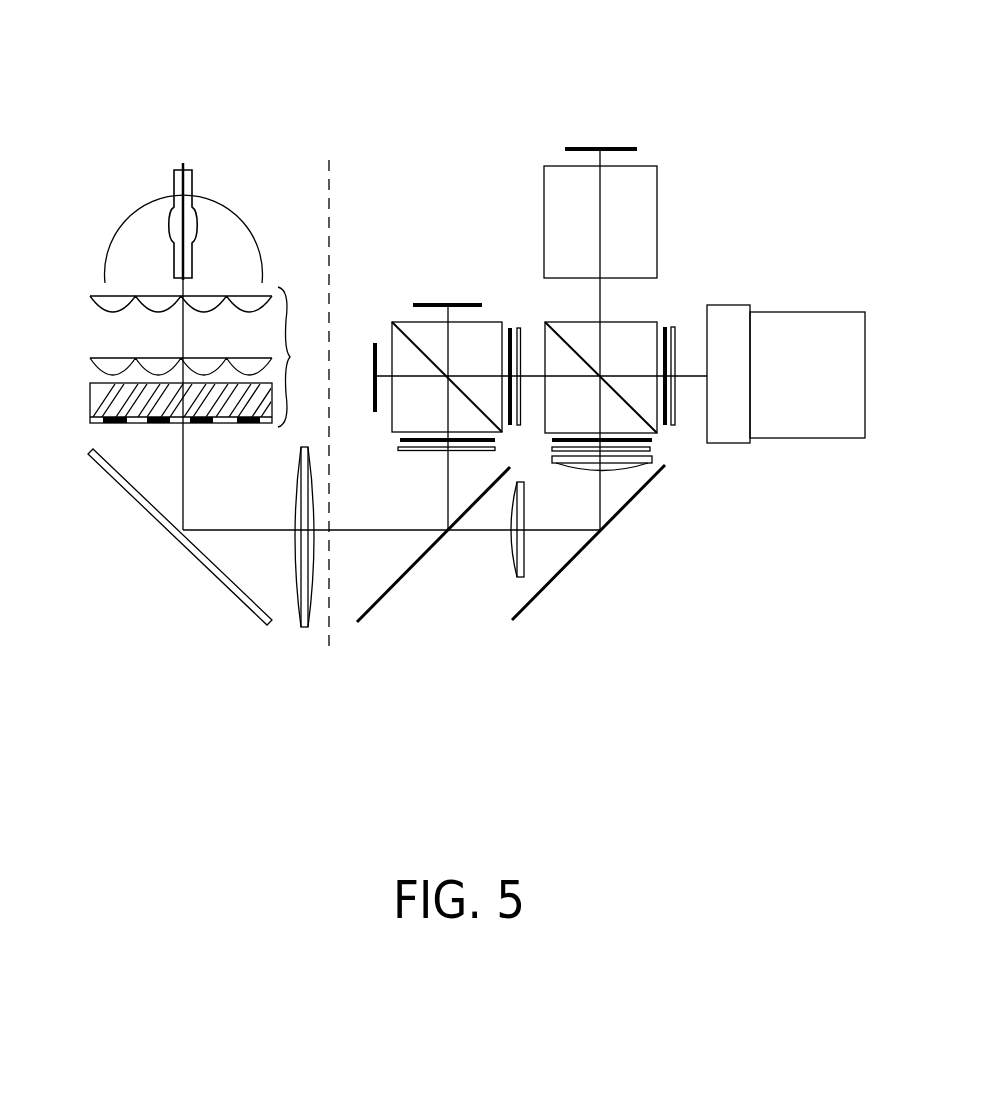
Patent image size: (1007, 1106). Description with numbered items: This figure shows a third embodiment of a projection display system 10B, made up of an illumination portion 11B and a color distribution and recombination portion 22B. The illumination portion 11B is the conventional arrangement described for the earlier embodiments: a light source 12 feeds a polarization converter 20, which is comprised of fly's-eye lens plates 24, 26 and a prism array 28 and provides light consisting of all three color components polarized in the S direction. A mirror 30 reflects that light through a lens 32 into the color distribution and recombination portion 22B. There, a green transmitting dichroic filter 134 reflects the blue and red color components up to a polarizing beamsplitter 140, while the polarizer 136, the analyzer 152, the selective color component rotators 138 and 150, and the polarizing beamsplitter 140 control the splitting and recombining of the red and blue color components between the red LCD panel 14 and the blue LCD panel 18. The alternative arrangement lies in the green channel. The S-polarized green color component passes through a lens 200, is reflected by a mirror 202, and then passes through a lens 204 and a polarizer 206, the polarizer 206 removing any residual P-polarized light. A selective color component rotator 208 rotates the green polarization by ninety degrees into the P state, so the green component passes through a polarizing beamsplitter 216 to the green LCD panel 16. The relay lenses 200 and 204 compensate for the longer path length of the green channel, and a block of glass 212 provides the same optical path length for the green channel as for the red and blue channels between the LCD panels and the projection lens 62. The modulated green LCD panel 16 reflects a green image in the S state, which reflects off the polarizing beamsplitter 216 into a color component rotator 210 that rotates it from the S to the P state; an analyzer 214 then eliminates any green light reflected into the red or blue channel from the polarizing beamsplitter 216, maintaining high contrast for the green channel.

The projection display system 10B is at (279, 68).
The illumination portion 11B is at (93, 540).
The light source 12 is at (155, 212).
The fly's-eye lens plate 24 is at (90, 297).
The fly's-eye lens plate 26 is at (92, 362).
The prism array 28 is at (92, 405).
The polarization converter 20 is at (292, 355).
The mirror 30 is at (200, 570).
The lens 32 is at (305, 628).
The red LCD panel 14 is at (340, 377).
The blue LCD panel 18 is at (448, 278).
The green LCD panel 16 is at (601, 122).
The polarizing beamsplitter 140 is at (392, 322).
The selective color component rotator 150 is at (510, 327).
The analyzer 152 is at (518, 327).
The selective color component rotator 138 is at (400, 440).
The polarizer 136 is at (400, 450).
The green transmitting dichroic filter 134 is at (365, 615).
The lens 200 is at (515, 577).
The mirror 202 is at (517, 613).
The block of glass 212 is at (657, 166).
The color component rotator 210 is at (667, 347).
The analyzer 214 is at (675, 347).
The polarizing beamsplitter 216 is at (653, 440).
The selective color component rotator 208 is at (653, 448).
The polarizer 206 is at (653, 460).
The lens 204 is at (667, 467).
The projection lens 62 is at (803, 340).
The color distribution and recombination portion 22B is at (688, 583).